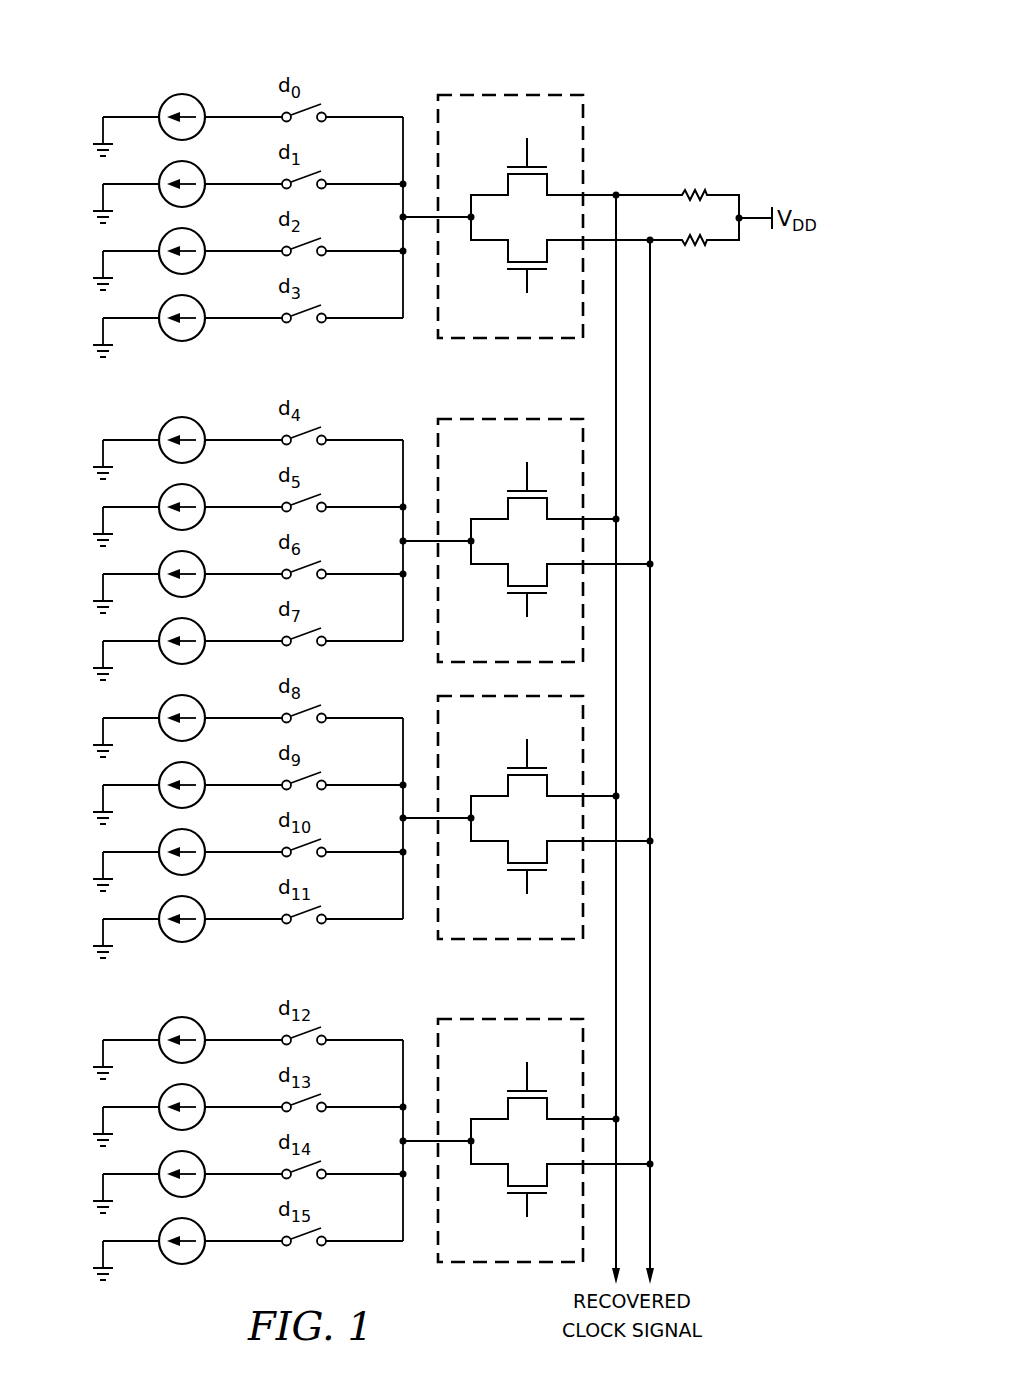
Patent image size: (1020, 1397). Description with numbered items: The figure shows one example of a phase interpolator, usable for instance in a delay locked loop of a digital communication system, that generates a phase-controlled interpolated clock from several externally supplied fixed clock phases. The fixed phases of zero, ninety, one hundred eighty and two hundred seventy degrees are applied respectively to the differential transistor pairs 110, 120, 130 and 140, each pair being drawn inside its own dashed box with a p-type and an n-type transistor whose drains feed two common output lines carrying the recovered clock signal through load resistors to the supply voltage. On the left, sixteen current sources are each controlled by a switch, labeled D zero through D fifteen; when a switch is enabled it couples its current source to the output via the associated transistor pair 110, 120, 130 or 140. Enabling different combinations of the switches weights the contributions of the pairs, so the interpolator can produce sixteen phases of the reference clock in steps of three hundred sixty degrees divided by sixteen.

The differential transistor pair 110 is at (534, 88).
The differential transistor pair 120 is at (534, 412).
The differential transistor pair 130 is at (487, 950).
The differential transistor pair 140 is at (487, 1275).